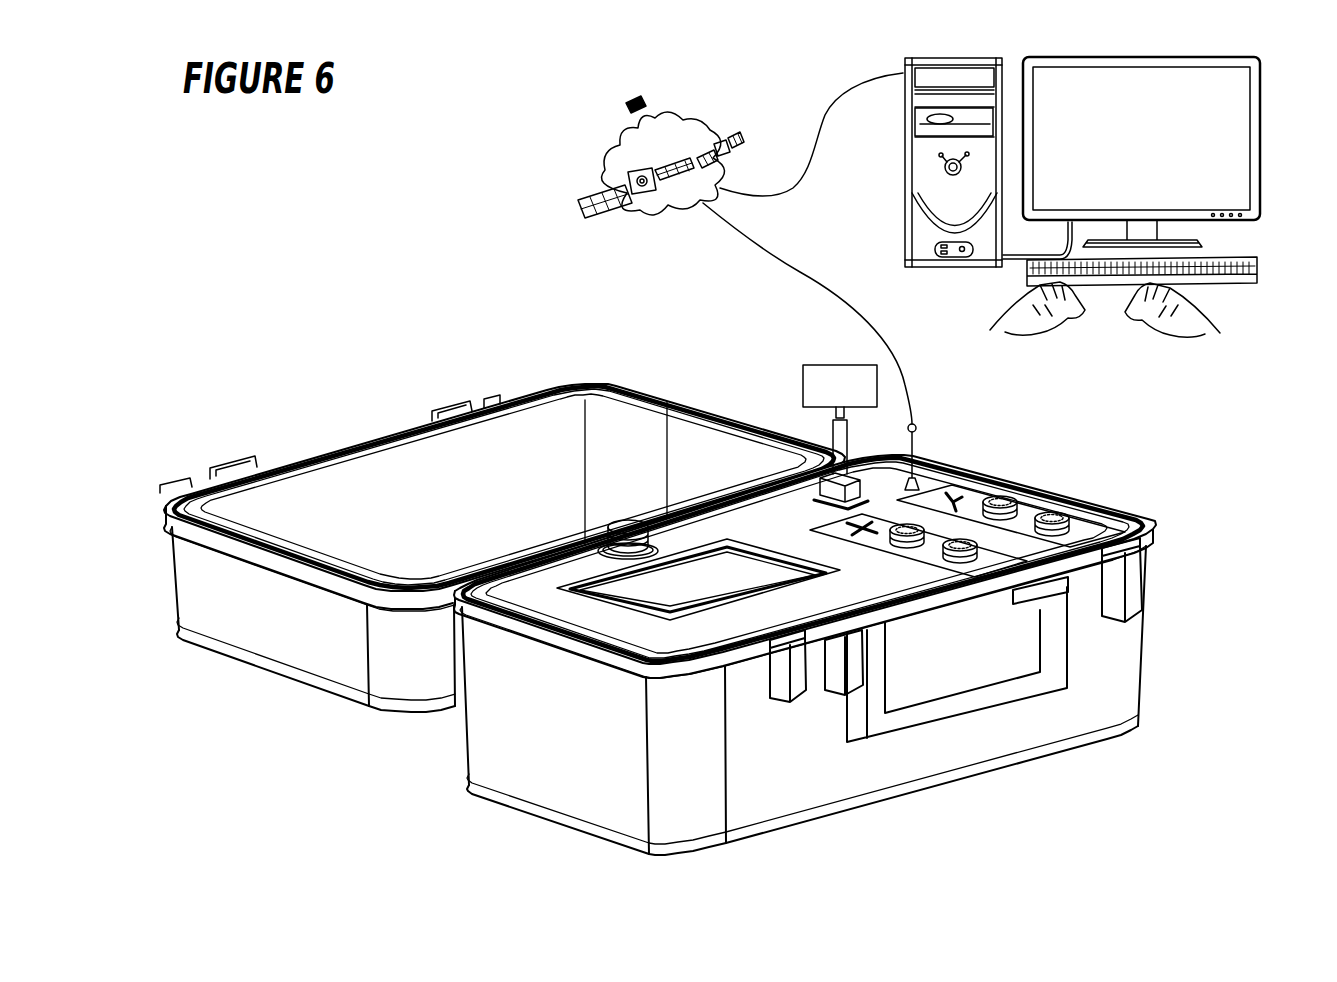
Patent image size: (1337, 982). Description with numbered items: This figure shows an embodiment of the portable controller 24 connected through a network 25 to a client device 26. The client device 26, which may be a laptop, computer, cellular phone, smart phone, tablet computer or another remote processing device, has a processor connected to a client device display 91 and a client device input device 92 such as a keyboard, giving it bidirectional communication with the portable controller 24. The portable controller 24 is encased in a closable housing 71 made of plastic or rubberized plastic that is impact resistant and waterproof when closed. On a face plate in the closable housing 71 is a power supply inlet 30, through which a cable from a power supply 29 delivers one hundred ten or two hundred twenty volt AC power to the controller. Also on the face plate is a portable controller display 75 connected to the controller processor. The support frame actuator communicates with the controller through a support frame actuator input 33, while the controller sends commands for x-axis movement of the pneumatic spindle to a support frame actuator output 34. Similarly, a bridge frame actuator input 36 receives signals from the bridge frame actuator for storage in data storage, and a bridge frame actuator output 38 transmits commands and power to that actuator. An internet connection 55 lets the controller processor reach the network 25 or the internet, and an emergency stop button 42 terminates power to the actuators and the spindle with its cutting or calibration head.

The portable controller 24 is at (658, 619).
The network 25 is at (699, 118).
The client device 26 is at (905, 161).
The power supply 29 is at (805, 388).
The power supply inlet 30 is at (815, 493).
The support frame actuator input 33 is at (911, 546).
The support frame actuator output 34 is at (968, 558).
The bridge frame actuator input 36 is at (1015, 513).
The bridge frame actuator output 38 is at (1072, 530).
The emergency stop button 42 is at (632, 519).
The internet connection 55 is at (915, 427).
The closable housing 71 is at (540, 795).
The portable controller display 75 is at (752, 531).
The client device display 91 is at (1261, 141).
The client device input device 92 is at (1259, 269).